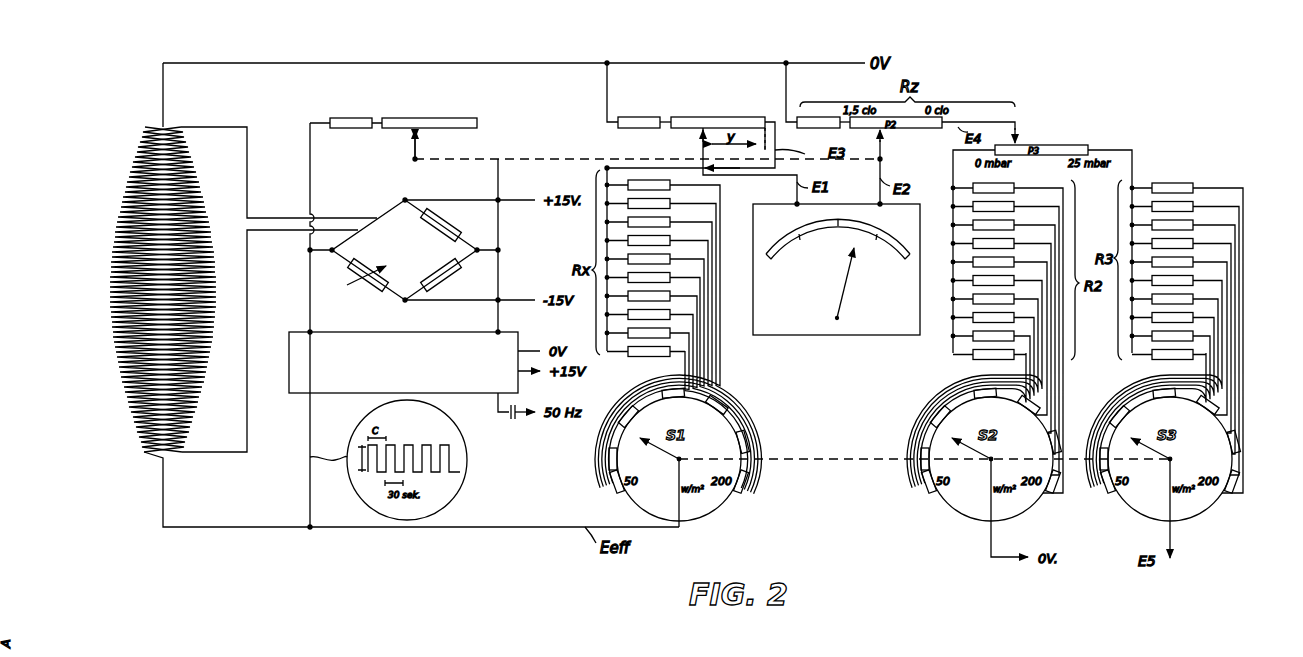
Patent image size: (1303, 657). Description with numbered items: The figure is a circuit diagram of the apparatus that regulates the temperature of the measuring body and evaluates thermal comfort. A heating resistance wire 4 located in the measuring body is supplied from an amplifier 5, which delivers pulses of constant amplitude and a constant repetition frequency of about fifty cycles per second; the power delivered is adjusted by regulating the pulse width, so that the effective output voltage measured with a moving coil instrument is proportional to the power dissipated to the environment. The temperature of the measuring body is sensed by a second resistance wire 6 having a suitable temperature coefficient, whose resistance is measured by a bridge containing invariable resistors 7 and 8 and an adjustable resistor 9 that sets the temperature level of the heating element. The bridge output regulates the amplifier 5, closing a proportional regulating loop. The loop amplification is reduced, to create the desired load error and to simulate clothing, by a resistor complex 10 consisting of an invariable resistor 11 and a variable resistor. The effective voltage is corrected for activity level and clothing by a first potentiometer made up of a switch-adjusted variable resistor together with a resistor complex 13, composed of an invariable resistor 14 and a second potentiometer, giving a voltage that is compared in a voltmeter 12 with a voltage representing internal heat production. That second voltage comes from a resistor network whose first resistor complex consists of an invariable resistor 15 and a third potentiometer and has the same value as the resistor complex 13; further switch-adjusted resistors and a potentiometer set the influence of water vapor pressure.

The resistance wire 4 is at (205, 343).
The amplifier 5 is at (463, 393).
The resistance wire 6 is at (197, 208).
The invariable resistor 7 is at (440, 218).
The invariable resistor 8 is at (448, 275).
The adjustable resistor 9 is at (352, 273).
The resistor complex 10 is at (478, 98).
The invariable resistor 11 is at (346, 128).
The voltmeter 12 is at (860, 335).
The resistor complex 13 is at (765, 107).
The invariable resistor 14 is at (634, 128).
The invariable resistor 15 is at (813, 128).